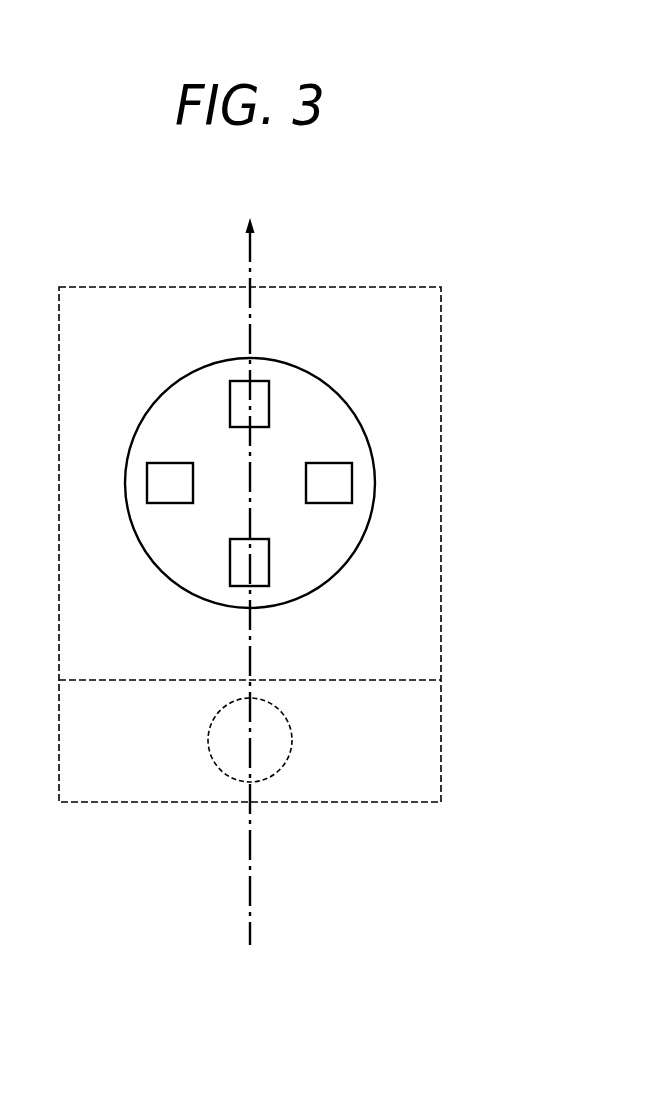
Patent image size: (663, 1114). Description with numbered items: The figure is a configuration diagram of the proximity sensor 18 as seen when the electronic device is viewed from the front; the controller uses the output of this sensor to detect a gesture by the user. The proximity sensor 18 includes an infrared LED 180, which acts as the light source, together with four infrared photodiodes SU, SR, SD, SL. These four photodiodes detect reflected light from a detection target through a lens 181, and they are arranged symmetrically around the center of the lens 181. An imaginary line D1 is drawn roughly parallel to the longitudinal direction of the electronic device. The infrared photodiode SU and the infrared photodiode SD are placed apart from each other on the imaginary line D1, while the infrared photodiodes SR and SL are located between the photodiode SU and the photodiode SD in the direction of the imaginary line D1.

The proximity sensor 18 is at (445, 338).
The infrared LED 180 is at (293, 741).
The lens 181 is at (356, 412).
The infrared photodiode SU is at (240, 387).
The infrared photodiode SD is at (232, 573).
The infrared photodiode SL is at (166, 482).
The infrared photodiode SR is at (336, 484).
The imaginary line D1 is at (236, 571).